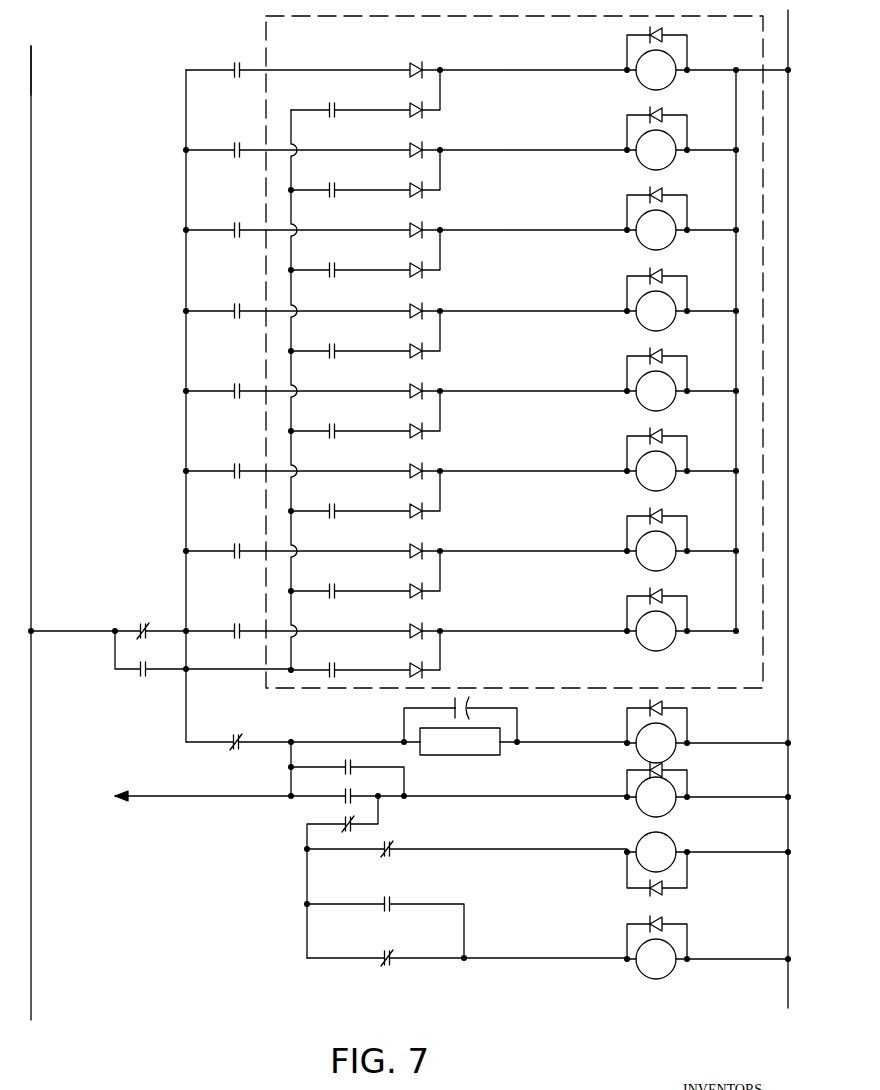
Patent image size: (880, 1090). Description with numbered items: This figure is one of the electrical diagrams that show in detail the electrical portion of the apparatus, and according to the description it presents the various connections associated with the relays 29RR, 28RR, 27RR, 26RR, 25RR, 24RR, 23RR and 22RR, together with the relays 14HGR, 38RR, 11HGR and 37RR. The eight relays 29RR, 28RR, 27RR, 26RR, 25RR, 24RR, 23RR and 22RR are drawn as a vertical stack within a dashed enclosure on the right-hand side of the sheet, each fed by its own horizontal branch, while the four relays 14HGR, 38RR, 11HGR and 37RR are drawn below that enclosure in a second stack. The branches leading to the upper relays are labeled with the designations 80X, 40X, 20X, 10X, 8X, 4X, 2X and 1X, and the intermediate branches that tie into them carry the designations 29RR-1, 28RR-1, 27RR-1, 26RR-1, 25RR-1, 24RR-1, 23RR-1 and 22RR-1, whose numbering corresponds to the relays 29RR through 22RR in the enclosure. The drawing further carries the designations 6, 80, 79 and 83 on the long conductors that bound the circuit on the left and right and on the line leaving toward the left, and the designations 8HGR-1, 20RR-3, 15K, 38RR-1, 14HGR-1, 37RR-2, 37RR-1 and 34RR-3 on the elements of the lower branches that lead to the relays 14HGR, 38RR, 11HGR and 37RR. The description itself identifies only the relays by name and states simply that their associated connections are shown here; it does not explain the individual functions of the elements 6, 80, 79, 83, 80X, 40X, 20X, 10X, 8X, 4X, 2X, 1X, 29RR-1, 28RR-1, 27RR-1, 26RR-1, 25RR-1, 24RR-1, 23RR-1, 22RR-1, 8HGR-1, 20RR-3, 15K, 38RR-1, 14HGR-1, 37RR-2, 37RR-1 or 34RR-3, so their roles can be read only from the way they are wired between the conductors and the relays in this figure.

The line 6 is at (40, 70).
The conductor 80 is at (31, 107).
The conductor 79 is at (788, 93).
The conductor 83 is at (371, 787).
The contact 80X is at (235, 66).
The contact 40X is at (235, 146).
The contact 20X is at (235, 226).
The contact 10X is at (235, 307).
The contact 8X is at (235, 387).
The contact 4X is at (235, 467).
The contact 2X is at (235, 547).
The contact 1X is at (235, 627).
The relay contact 29RR-1 is at (343, 123).
The relay contact 28RR-1 is at (343, 203).
The relay contact 27RR-1 is at (343, 283).
The relay contact 26RR-1 is at (343, 364).
The relay contact 25RR-1 is at (343, 444).
The relay contact 24RR-1 is at (343, 524).
The relay contact 23RR-1 is at (343, 604).
The relay contact 22RR-1 is at (343, 657).
The relay 29RR is at (662, 82).
The relay 28RR is at (662, 162).
The relay 27RR is at (662, 242).
The relay 26RR is at (662, 323).
The relay 25RR is at (662, 403).
The relay 24RR is at (662, 483).
The relay 23RR is at (662, 563).
The relay 22RR is at (662, 643).
The relay contact 8HGR-1 is at (141, 627).
The relay contact 20RR-3 is at (233, 738).
The resistor 15K is at (515, 726).
The relay 14HGR is at (668, 755).
The relay contact 38RR-1 is at (358, 758).
The relay 38RR is at (667, 810).
The relay contact 14HGR-1 is at (350, 821).
The relay contact 37RR-2 is at (402, 843).
The relay 11HGR is at (668, 848).
The relay contact 37RR-1 is at (400, 893).
The relay contact 34RR-3 is at (381, 954).
The relay 37RR is at (667, 972).